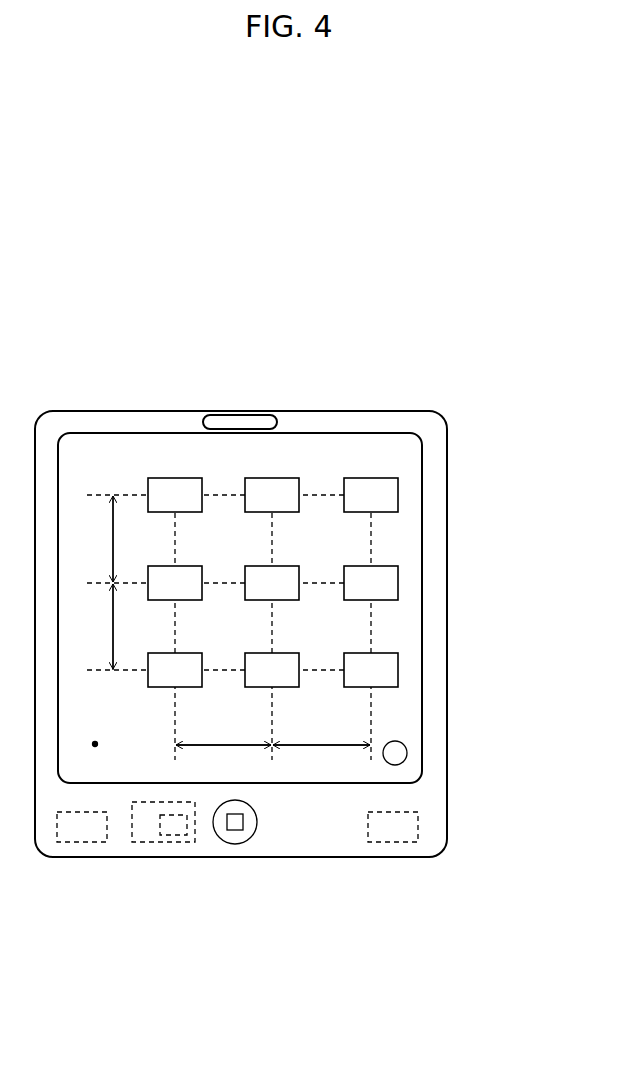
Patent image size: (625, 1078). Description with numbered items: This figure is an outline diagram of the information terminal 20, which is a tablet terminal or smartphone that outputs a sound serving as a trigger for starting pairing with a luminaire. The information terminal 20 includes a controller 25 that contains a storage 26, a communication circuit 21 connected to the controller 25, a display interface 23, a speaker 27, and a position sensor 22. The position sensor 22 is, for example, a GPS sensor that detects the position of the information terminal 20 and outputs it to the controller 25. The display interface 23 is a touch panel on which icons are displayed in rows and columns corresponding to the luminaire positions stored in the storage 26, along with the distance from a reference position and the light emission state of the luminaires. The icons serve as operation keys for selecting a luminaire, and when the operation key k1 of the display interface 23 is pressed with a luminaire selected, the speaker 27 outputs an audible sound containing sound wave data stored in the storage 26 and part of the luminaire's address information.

The information terminal 20 is at (450, 446).
The speaker 27 is at (277, 422).
The display interface 23 is at (422, 598).
The operation key k1 is at (407, 753).
The communication circuit 21 is at (418, 822).
The position sensor 22 is at (91, 843).
The controller 25 is at (145, 843).
The storage 26 is at (184, 836).